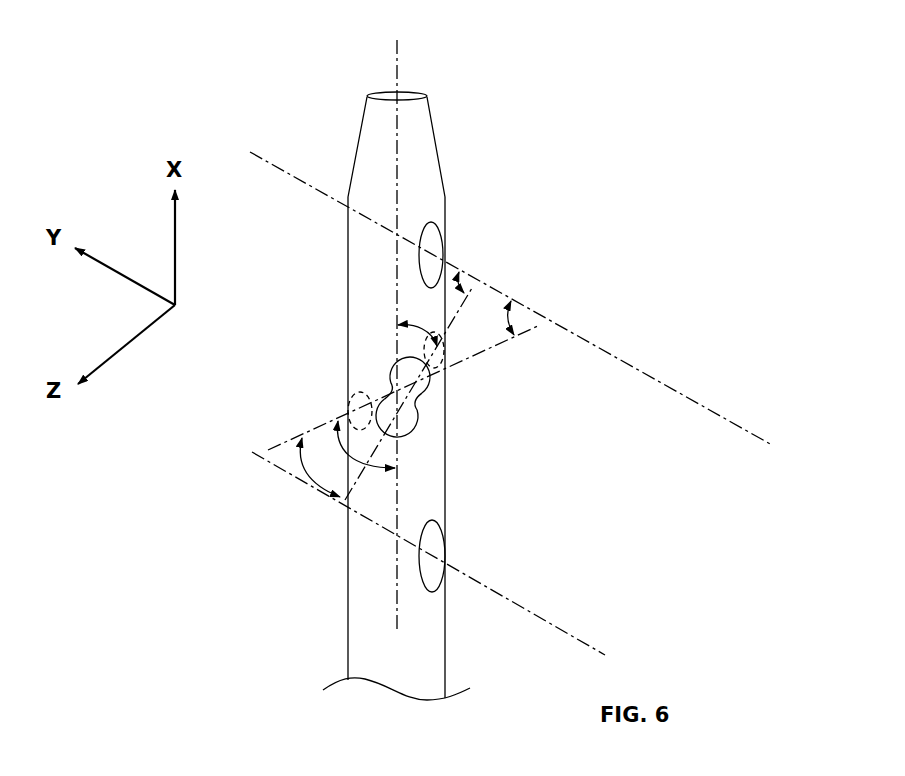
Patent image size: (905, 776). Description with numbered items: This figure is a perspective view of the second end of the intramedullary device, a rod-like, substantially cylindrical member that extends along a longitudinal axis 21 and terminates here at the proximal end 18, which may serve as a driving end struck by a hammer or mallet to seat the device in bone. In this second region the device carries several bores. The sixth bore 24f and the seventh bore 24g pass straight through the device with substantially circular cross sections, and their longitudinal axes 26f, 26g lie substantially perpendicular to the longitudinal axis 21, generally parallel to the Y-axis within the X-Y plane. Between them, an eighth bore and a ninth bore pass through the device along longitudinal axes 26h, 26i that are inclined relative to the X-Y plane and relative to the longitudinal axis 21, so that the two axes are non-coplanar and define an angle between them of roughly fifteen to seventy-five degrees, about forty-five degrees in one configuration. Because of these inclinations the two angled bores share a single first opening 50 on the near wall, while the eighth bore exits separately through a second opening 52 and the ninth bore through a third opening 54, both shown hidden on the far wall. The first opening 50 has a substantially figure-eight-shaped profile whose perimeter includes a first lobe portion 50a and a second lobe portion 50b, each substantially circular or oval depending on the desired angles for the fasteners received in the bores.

The longitudinal axis 21 is at (400, 66).
The proximal end 18 is at (383, 92).
The longitudinal axis of seventh bore 26g is at (283, 170).
The longitudinal axis of sixth bore 26f is at (297, 480).
The longitudinal axis of eighth bore 26h is at (380, 398).
The longitudinal axis of ninth bore 26i is at (360, 480).
The seventh bore 24g is at (439, 226).
The sixth bore 24f is at (443, 528).
The third opening 54 is at (435, 320).
The second opening 52 is at (357, 390).
The first opening 50 is at (405, 385).
The first lobe portion 50a is at (413, 440).
The second lobe portion 50b is at (392, 364).